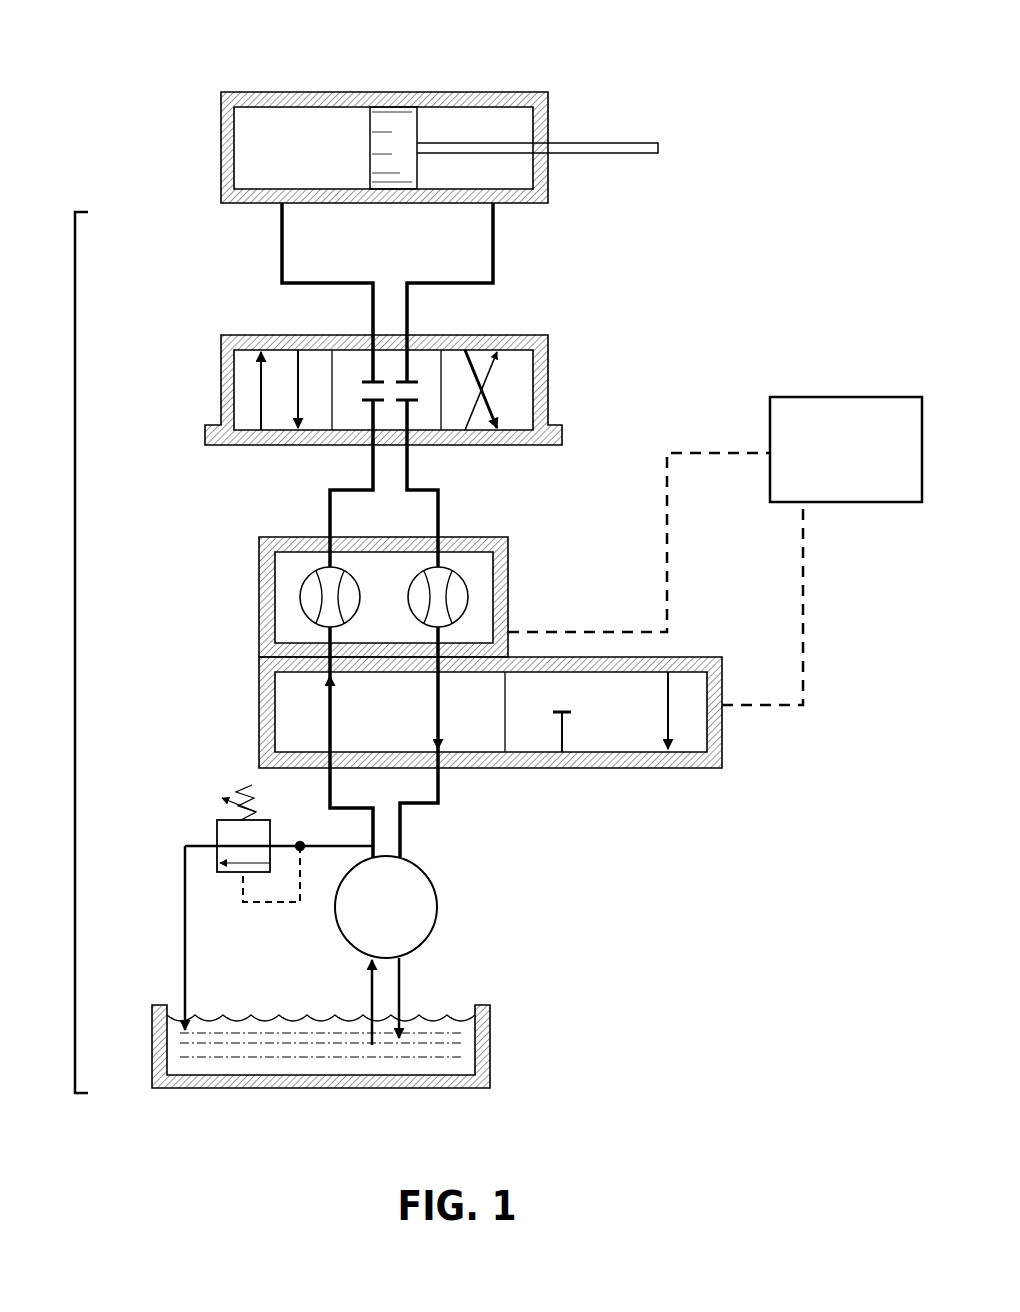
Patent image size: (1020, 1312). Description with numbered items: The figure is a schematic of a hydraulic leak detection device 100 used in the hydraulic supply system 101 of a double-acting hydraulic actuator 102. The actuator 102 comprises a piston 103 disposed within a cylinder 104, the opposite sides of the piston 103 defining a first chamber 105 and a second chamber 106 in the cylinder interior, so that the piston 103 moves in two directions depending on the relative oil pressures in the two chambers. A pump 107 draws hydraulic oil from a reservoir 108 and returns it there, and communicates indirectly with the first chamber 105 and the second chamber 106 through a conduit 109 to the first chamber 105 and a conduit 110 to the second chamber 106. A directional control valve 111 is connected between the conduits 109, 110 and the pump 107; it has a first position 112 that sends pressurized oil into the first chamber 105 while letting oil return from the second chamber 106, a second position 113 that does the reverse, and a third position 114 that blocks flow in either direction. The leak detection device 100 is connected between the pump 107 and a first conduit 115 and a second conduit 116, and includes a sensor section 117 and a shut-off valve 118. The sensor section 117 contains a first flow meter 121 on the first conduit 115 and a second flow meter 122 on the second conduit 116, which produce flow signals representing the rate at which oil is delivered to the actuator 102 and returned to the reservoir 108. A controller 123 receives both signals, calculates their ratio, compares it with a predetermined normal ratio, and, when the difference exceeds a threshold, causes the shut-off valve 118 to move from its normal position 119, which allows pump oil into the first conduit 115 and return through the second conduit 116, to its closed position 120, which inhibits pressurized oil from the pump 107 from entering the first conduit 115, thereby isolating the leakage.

The hydraulic leak detection device 100 is at (232, 597).
The hydraulic supply system 101 is at (75, 612).
The double-acting hydraulic actuator 102 is at (388, 102).
The piston 103 is at (395, 116).
The cylinder 104 is at (486, 92).
The first chamber 105 is at (262, 145).
The second chamber 106 is at (505, 173).
The pump 107 is at (438, 905).
The reservoir 108 is at (490, 1052).
The conduit 109 is at (282, 253).
The conduit 110 is at (493, 232).
The directional control valve 111 is at (399, 359).
The first position 112 is at (250, 388).
The second position 113 is at (515, 380).
The third position 114 is at (350, 372).
The first conduit 115 is at (330, 500).
The second conduit 116 is at (440, 503).
The sensor section 117 is at (382, 583).
The shut-off valve 118 is at (442, 664).
The normal position 119 is at (300, 690).
The closed position 120 is at (680, 695).
The first flow meter 121 is at (300, 585).
The second flow meter 122 is at (460, 577).
The controller 123 is at (872, 502).